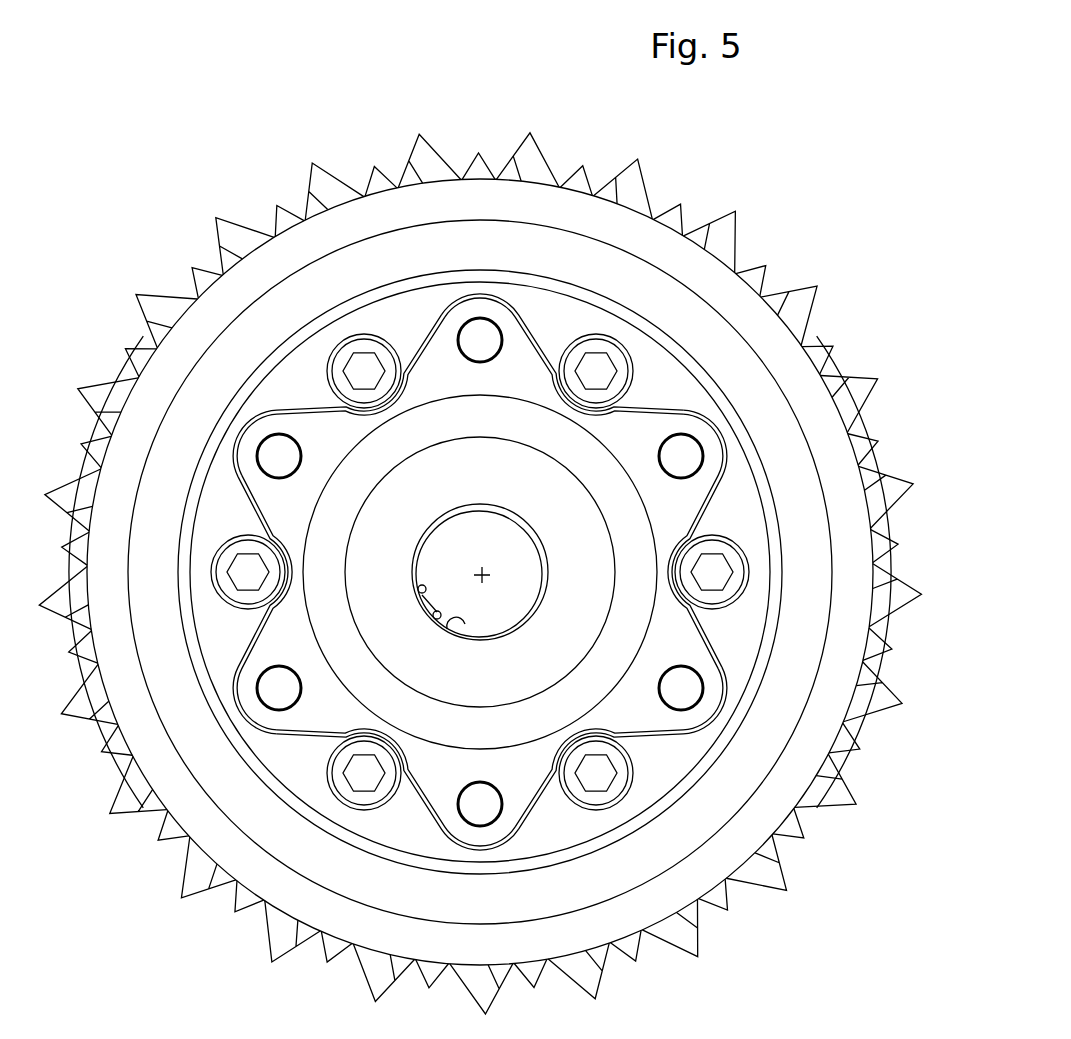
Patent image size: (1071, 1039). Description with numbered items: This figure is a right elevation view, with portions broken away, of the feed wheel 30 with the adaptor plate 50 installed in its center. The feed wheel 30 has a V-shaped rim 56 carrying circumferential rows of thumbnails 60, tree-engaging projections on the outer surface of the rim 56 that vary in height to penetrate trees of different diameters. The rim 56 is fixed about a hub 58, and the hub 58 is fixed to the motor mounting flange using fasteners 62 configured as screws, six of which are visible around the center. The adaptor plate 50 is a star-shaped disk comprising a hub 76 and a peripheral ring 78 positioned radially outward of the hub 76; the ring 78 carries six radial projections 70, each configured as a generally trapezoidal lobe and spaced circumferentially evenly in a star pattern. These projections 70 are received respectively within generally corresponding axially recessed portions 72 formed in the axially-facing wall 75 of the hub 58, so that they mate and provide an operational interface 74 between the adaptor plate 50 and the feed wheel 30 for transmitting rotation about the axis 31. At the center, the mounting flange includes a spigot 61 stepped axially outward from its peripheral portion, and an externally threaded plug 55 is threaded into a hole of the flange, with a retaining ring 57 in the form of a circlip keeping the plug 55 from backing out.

The feed wheel 30 is at (268, 160).
The thumbnails 60 is at (231, 237).
The rim 56 is at (190, 320).
The axially-facing wall 75 is at (672, 383).
The hub 58 is at (270, 392).
The adaptor plate 50 is at (431, 362).
The axially recessed portions 72 is at (484, 296).
The operational interface 74 is at (303, 398).
The radial projections 70 is at (513, 329).
The fasteners 62 is at (222, 588).
The peripheral ring 78 is at (465, 385).
The hub 76 is at (423, 433).
The spigot 61 is at (562, 654).
The plug 55 is at (485, 548).
The axis 31 is at (482, 575).
The retaining ring 57 is at (461, 628).